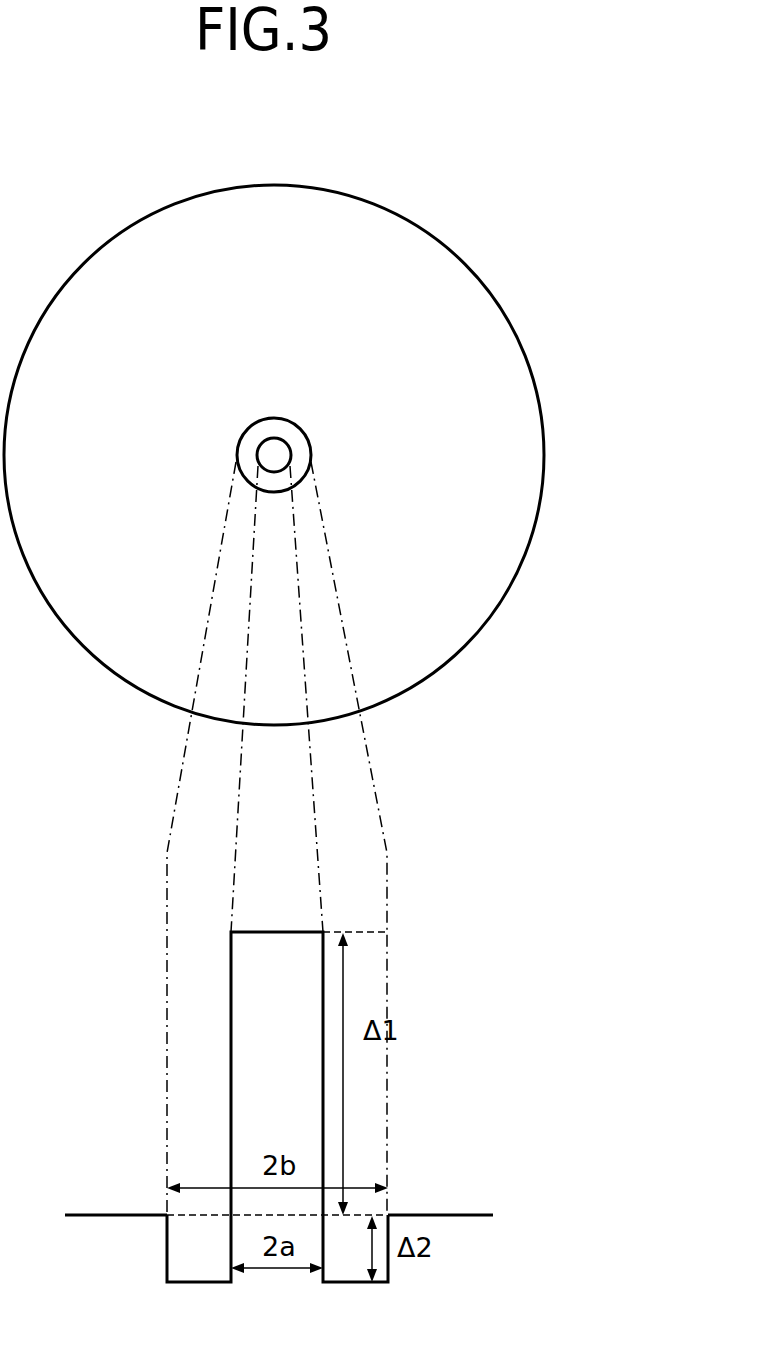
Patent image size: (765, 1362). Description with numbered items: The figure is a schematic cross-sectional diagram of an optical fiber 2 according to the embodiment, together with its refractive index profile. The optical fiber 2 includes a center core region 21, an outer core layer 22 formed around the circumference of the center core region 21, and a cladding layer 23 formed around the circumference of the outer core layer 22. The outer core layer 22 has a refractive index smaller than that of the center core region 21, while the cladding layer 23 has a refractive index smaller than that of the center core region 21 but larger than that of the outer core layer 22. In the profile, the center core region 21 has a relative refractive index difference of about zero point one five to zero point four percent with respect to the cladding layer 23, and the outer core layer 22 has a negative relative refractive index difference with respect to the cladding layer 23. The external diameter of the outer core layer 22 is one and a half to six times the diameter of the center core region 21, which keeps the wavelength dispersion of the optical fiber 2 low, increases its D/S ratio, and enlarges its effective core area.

The optical fiber 2 is at (461, 216).
The center core region 21 is at (278, 455).
The outer core layer 22 is at (283, 478).
The cladding layer 23 is at (473, 565).